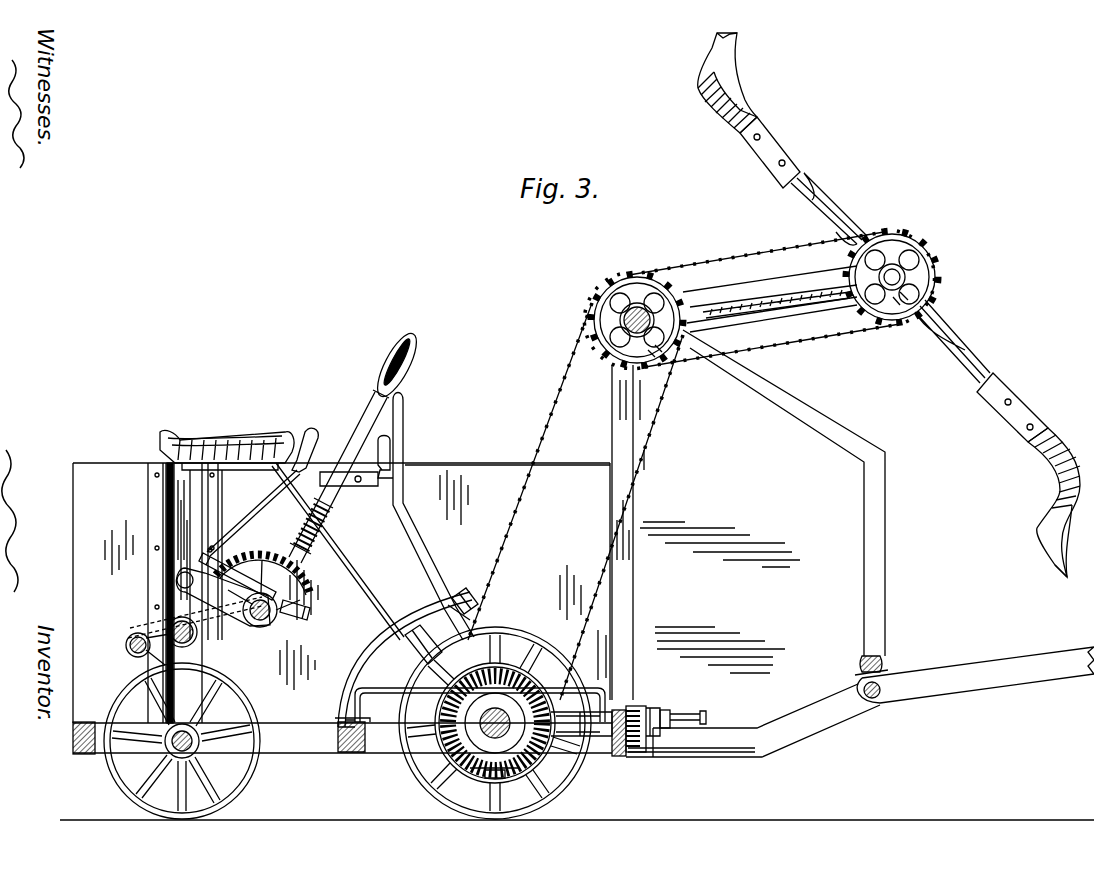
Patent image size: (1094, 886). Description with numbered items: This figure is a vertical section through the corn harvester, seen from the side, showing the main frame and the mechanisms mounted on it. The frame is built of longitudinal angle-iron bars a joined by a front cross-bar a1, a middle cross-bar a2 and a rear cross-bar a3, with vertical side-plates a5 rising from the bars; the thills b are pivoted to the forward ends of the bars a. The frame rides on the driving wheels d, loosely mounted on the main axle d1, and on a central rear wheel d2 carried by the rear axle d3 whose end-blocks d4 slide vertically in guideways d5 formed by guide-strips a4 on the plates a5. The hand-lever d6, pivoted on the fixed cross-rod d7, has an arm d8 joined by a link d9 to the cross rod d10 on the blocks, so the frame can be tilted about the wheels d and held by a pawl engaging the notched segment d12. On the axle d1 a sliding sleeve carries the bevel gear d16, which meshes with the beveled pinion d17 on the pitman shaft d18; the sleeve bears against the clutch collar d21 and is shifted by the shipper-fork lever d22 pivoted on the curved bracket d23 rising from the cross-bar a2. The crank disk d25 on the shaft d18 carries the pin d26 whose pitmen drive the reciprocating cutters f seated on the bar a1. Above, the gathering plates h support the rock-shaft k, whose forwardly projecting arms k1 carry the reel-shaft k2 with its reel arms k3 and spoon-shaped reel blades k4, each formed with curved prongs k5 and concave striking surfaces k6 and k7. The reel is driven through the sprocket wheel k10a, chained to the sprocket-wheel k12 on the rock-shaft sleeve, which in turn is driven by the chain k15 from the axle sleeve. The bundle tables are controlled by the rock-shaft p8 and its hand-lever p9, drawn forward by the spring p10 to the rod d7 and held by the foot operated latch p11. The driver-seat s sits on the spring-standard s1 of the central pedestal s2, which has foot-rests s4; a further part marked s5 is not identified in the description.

The longitudinal angle-iron bars a is at (476, 720).
The front cross-bar a1 is at (618, 756).
The middle cross-bar a2 is at (355, 752).
The rear cross-bar a3 is at (80, 730).
The guide-strips a4 is at (152, 513).
The vertical side-plates a5 is at (490, 485).
The thills b is at (975, 672).
The ground or driving wheels d is at (476, 765).
The main axle or drive-shaft d1 is at (470, 718).
The rear wheel d2 is at (245, 772).
The rear axle or cross-rod d3 is at (190, 757).
The end-blocks d4 is at (320, 520).
The guideways d5 is at (172, 478).
The hand-lever d6 is at (420, 345).
The fixed cross-rod d7 is at (278, 615).
The angular projection or arm d8 is at (250, 626).
The link d9 is at (150, 616).
The cross rod d10 is at (167, 634).
The notched segment d12 is at (305, 596).
The bevel gear d16 is at (505, 774).
The beveled pinion d17 is at (565, 738).
The pitman driving shaft d18 is at (649, 708).
The clutch collar d21 is at (668, 714).
The shipper-fork lever d22 is at (405, 415).
The curved bracket d23 is at (385, 645).
The crank disk d25 is at (640, 752).
The pin d26 is at (706, 718).
The reciprocating knives or cutters f is at (660, 750).
The gathering plates h is at (842, 432).
The rock-shaft k is at (593, 318).
The forwardly projecting arms k1 is at (745, 295).
The reel-shaft k2 is at (938, 285).
The reel arms k3 is at (966, 326).
The reel blades k4 is at (775, 145).
The curved prongs k5 is at (1058, 572).
The concave striking surface k6 is at (728, 88).
The concave striking surface k7 is at (715, 62).
The sprocket wheel k10a is at (906, 304).
The sprocket-wheel k12 is at (622, 347).
The chain k15 is at (825, 337).
The rock-shaft p8 is at (126, 645).
The hand-lever p9 is at (313, 432).
The spring p10 is at (236, 568).
The foot operated latch p11 is at (310, 612).
The driver-seat s is at (245, 438).
The spring-standard s1 is at (388, 618).
The central pedestal s2 is at (380, 668).
The foot-rests s4 is at (418, 640).
The rod s5 is at (588, 690).